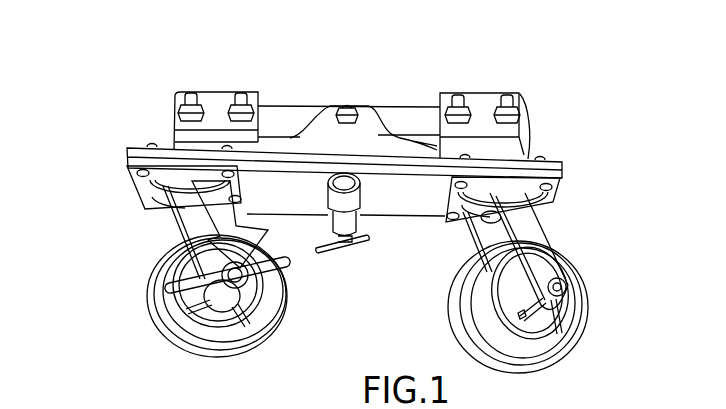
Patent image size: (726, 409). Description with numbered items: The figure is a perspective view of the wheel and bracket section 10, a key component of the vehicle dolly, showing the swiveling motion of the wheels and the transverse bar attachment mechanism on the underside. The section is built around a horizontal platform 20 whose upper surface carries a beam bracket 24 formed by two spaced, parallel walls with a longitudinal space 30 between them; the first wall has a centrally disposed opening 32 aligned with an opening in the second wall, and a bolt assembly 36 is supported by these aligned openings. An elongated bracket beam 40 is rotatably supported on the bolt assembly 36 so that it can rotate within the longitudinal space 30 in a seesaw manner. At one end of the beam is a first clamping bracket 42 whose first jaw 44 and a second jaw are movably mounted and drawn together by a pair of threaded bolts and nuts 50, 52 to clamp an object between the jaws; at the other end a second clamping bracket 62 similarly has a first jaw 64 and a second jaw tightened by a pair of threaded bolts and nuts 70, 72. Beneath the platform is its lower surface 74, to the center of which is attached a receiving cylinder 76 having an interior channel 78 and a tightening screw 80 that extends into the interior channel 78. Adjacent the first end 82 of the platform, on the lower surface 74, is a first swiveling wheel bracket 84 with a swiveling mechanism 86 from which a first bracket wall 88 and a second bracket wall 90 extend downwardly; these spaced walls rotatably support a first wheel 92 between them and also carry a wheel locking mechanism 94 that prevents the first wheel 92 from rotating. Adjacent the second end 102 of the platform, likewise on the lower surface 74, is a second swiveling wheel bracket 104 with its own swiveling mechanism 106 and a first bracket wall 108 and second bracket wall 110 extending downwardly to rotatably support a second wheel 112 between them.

The wheel and bracket section 10 is at (81, 178).
The horizontal platform 20 is at (522, 165).
The beam bracket 24 is at (378, 145).
The longitudinal space 30 is at (100, 401).
The centrally disposed opening 32 is at (28, 408).
The bolt assembly 36 is at (347, 106).
The bracket beam 40 is at (414, 116).
The first clamping bracket 42 is at (164, 75).
The first jaw 44 is at (183, 123).
The threaded bolt and nut 50 is at (191, 92).
The threaded bolt and nut 52 is at (240, 92).
The second clamping bracket 62 is at (542, 82).
The first jaw 64 is at (514, 132).
The threaded bolt and nut 70 is at (458, 94).
The threaded bolt and nut 72 is at (507, 94).
The lower surface 74 is at (293, 203).
The receiving cylinder 76 is at (359, 203).
The interior channel 78 is at (345, 182).
The tightening screw 80 is at (345, 252).
The first end 82 is at (127, 160).
The first swiveling wheel bracket 84 is at (104, 240).
The swiveling mechanism 86 is at (138, 202).
The first bracket wall 88 is at (152, 240).
The second bracket wall 90 is at (170, 230).
The first wheel 92 is at (216, 360).
The wheel locking mechanism 94 is at (272, 305).
The second end 102 is at (562, 186).
The second swiveling wheel bracket 104 is at (575, 239).
The swiveling mechanism 106 is at (472, 245).
The first bracket wall 108 is at (553, 268).
The second bracket wall 110 is at (480, 226).
The second wheel 112 is at (574, 348).